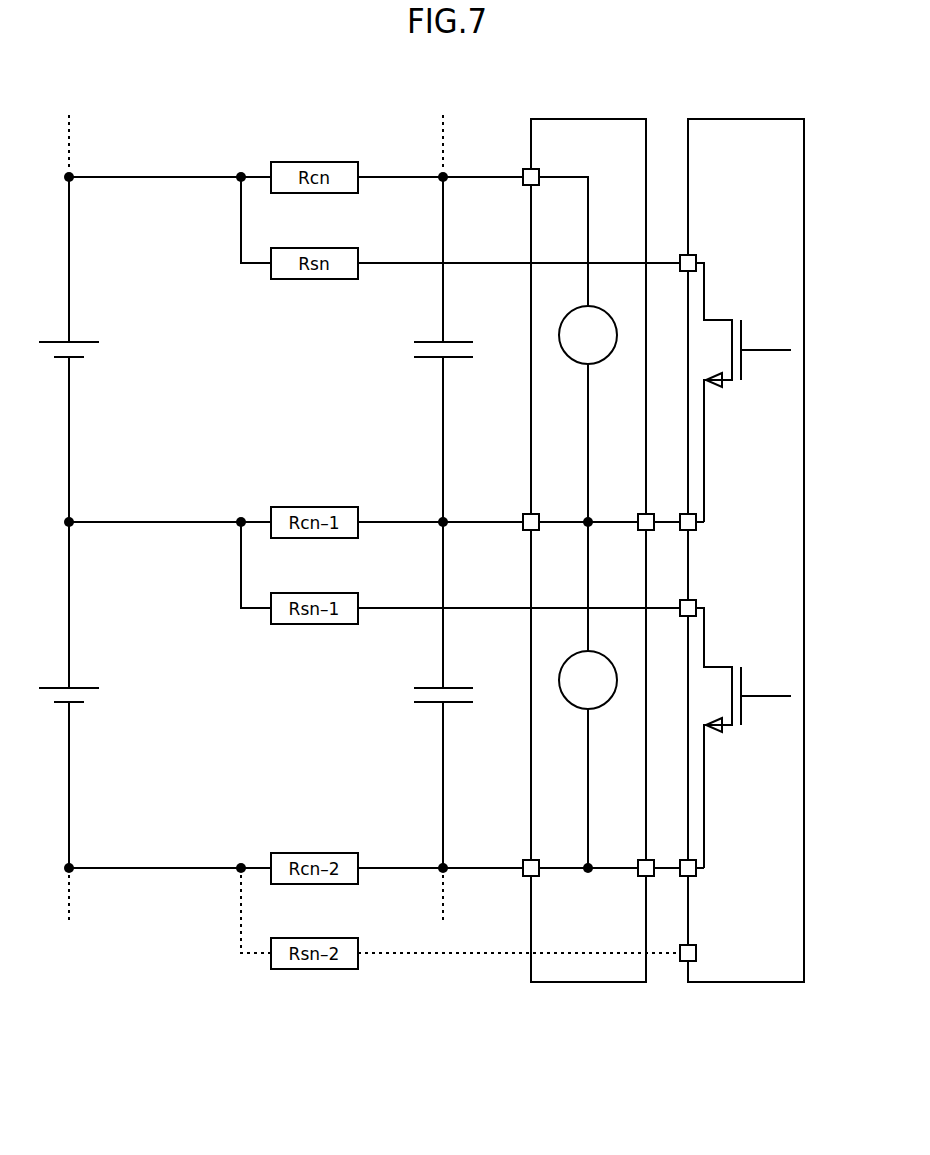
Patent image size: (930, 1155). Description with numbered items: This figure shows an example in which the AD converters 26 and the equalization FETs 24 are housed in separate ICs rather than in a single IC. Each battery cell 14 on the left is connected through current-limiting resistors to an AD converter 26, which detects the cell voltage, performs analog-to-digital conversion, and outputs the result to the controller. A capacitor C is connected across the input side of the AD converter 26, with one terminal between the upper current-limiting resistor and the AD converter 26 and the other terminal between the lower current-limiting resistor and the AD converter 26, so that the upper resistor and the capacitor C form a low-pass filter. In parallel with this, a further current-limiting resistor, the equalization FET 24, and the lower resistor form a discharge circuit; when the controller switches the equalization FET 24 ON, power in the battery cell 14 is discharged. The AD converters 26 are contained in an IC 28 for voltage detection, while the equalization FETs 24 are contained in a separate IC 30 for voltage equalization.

The battery cell 14 is at (106, 363).
The equalization FET 24 is at (738, 310).
The AD converter 26 is at (608, 318).
The IC for voltage detection 28 is at (607, 119).
The IC for voltage equalization 30 is at (781, 119).
The capacitor C is at (425, 531).